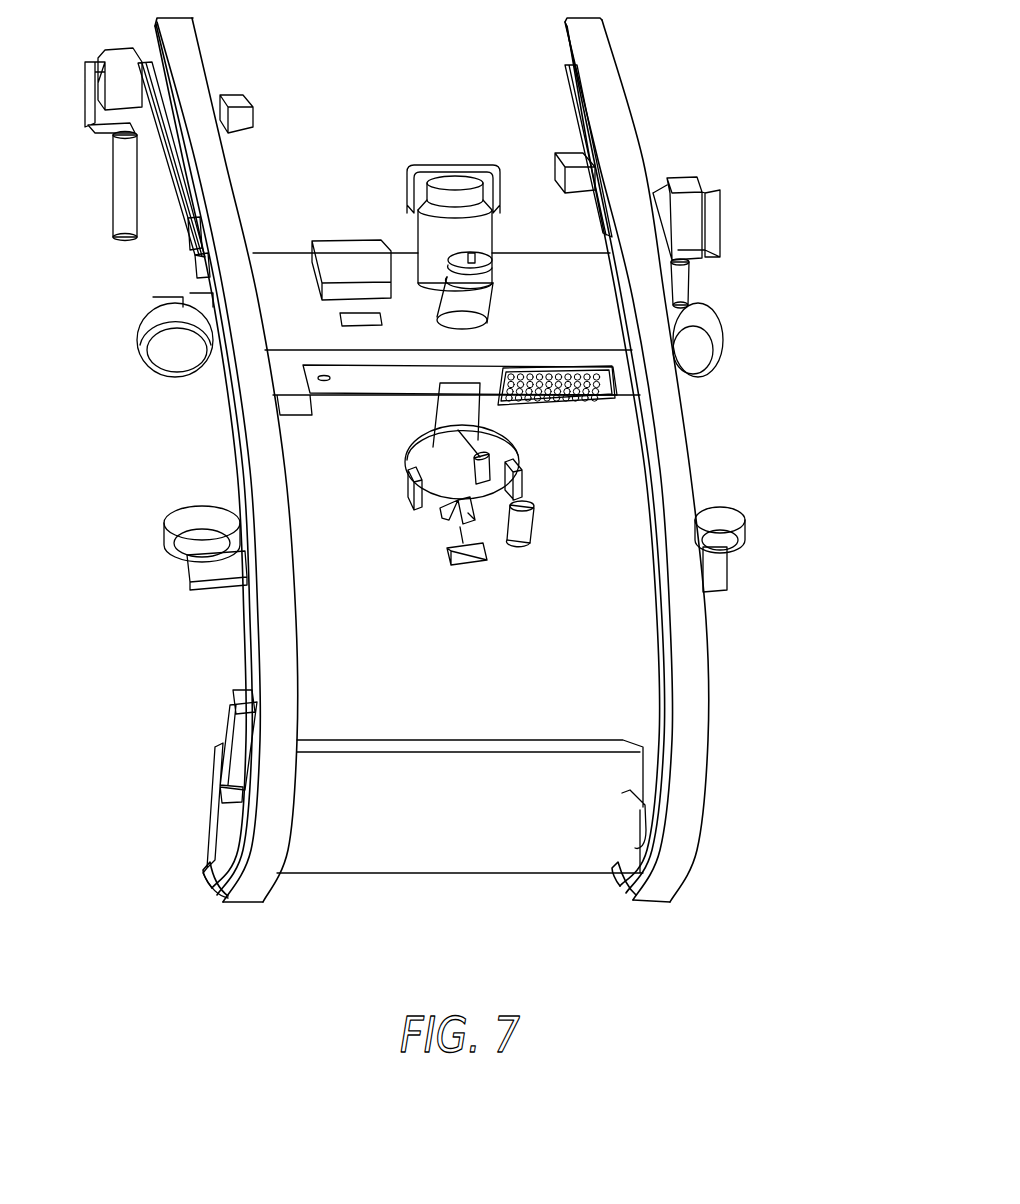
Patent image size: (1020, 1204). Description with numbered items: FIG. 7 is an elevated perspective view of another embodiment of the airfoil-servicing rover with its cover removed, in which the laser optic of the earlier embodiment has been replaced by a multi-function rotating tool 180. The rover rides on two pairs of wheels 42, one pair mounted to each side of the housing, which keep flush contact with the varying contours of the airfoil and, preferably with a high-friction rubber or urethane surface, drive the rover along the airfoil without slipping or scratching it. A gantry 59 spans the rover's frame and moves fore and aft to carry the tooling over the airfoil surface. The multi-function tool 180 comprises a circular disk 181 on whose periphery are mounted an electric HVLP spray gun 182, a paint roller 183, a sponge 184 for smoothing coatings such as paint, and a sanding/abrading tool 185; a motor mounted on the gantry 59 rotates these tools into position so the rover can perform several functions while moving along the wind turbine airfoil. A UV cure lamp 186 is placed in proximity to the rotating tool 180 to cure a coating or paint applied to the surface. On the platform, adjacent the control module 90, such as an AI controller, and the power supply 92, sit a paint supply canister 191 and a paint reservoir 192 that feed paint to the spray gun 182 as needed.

The wheels 42 is at (177, 510).
The gantry 59 is at (353, 397).
The control module 90 is at (340, 318).
The power supply 92 is at (333, 247).
The multi-function rotating tool 180 is at (453, 398).
The circular disk 181 is at (413, 445).
The electric HVLP spray gun 182 is at (486, 440).
The paint roller 183 is at (530, 535).
The sponge 184 is at (457, 563).
The sanding/abrading tool 185 is at (407, 507).
The UV cure lamp 186 is at (573, 405).
The paint supply canister 191 is at (487, 308).
The paint reservoir 192 is at (458, 165).